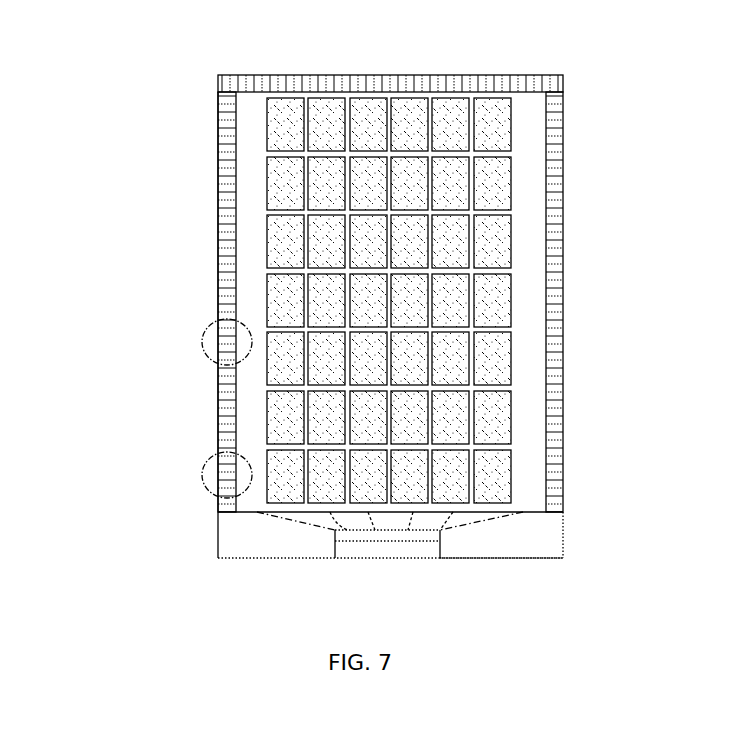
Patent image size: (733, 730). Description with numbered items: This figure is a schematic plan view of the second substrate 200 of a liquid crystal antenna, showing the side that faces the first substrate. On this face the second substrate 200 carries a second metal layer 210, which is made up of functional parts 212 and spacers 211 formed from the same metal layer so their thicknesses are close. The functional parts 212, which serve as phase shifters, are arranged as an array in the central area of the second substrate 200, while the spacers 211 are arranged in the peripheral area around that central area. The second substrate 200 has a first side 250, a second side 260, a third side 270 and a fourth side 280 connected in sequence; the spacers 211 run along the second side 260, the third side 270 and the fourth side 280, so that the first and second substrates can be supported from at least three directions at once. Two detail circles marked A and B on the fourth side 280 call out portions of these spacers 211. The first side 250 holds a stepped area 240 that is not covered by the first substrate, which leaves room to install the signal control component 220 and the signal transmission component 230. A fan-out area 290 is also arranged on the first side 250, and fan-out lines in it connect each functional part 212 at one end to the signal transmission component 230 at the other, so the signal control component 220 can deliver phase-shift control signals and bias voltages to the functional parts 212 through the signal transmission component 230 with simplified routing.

The second substrate 200 is at (357, 48).
The second metal layer 210 is at (98, 127).
The spacers 211 is at (217, 163).
The functional parts 212 is at (266, 292).
The signal control component 220 is at (414, 557).
The signal transmission component 230 is at (346, 551).
The stepped area 240 is at (249, 553).
The first side 250 is at (521, 564).
The second side 260 is at (570, 471).
The third side 270 is at (229, 70).
The fourth side 280 is at (206, 392).
The fan-out area 290 is at (323, 534).
The detail region A is at (210, 332).
The detail region B is at (211, 464).